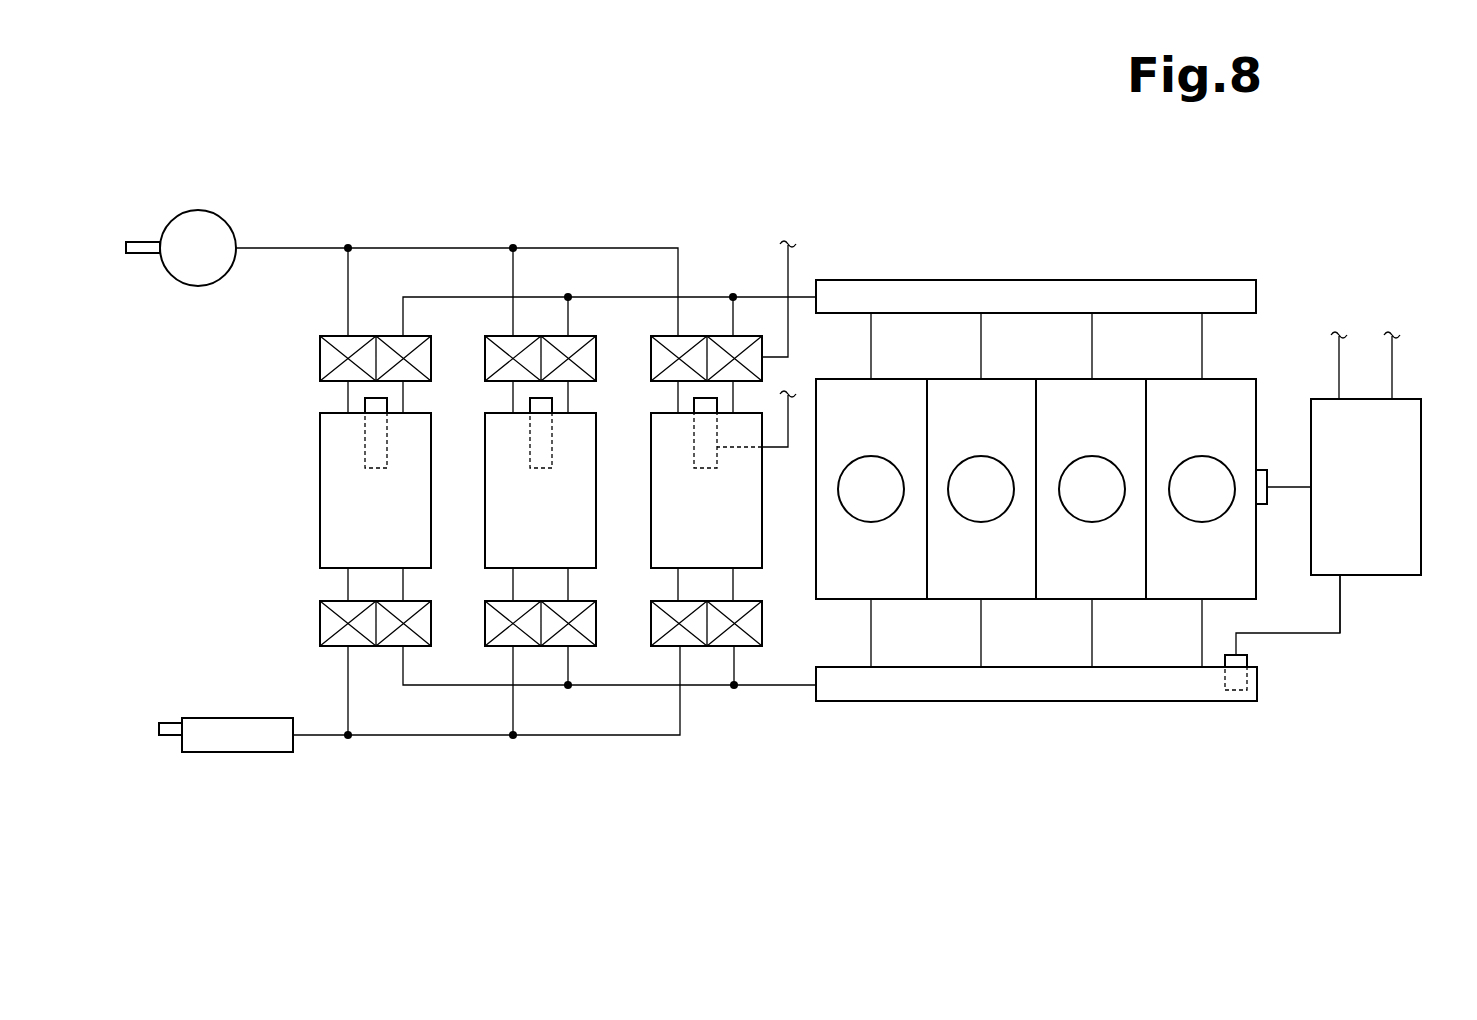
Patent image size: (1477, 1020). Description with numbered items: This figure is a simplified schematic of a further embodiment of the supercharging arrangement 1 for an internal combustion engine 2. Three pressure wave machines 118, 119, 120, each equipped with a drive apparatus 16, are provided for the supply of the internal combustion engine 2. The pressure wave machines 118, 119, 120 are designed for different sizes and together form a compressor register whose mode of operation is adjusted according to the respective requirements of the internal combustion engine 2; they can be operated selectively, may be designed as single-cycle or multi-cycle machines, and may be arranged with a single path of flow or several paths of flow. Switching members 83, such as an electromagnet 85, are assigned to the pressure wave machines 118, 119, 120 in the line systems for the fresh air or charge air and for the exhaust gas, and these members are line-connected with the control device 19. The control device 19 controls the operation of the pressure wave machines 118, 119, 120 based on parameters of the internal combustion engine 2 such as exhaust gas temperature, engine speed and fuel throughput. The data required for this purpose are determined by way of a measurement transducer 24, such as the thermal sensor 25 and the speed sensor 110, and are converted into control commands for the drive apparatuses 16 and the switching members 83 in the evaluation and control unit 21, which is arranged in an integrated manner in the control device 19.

The supercharging arrangement 1 is at (857, 177).
The internal combustion engine 2 is at (1136, 507).
The drive apparatus 16 is at (351, 404).
The control device 19 is at (1382, 526).
The evaluation and control unit 21 is at (1393, 507).
The measurement transducer 24 is at (1232, 708).
The thermal sensor 25 is at (1232, 680).
The switching member 83 is at (733, 446).
The electromagnet 85 is at (740, 348).
The speed sensor 110 is at (1261, 466).
The pressure wave machine 118 is at (343, 514).
The pressure wave machine 119 is at (507, 512).
The pressure wave machine 120 is at (682, 510).